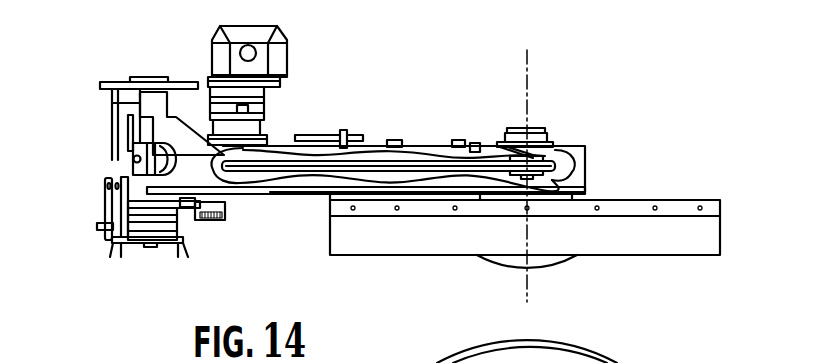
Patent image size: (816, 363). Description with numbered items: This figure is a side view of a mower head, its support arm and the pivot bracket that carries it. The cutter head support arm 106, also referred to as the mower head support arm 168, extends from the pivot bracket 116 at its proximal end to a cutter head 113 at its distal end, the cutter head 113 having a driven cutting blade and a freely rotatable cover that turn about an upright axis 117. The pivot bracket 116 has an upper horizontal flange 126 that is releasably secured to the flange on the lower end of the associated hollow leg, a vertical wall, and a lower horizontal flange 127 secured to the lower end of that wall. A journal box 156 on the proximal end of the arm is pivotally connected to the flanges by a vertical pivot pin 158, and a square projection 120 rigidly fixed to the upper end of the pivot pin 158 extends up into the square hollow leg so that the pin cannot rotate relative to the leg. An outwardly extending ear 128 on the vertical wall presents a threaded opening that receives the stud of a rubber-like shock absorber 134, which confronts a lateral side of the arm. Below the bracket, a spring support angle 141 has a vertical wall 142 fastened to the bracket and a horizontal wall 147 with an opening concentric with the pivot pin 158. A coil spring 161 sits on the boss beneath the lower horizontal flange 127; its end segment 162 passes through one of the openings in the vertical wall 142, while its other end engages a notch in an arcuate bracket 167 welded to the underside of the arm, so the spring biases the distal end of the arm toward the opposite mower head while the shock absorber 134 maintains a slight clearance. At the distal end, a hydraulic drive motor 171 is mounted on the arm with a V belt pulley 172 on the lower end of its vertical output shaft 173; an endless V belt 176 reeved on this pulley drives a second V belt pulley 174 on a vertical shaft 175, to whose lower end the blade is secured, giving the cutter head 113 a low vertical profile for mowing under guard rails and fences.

The cutter head support arm 106 is at (585, 181).
The cutter head 113 is at (707, 199).
The pivot bracket 116 is at (118, 101).
The upright axis 117 is at (528, 286).
The square projection 120 is at (132, 81).
The upper horizontal flange 126 is at (178, 82).
The lower horizontal flange 127 is at (150, 204).
The outwardly extending ear 128 is at (130, 159).
The shock absorber 134 is at (137, 130).
The spring support angle 141 is at (105, 262).
The vertical wall 142 is at (105, 192).
The horizontal wall 147 is at (187, 262).
The journal box 156 is at (118, 104).
The pivot pin 158 is at (145, 262).
The coil spring 161 is at (173, 226).
The end segment 162 is at (100, 229).
The arcuate bracket 167 is at (226, 208).
The mower head support arm 168 is at (578, 147).
The hydraulic drive motor 171 is at (280, 57).
The V belt pulley 172 is at (278, 182).
The vertical output shaft 173 is at (262, 133).
The V belt pulley 174 is at (497, 151).
The vertical shaft 175 is at (531, 150).
The endless V belt 176 is at (378, 145).